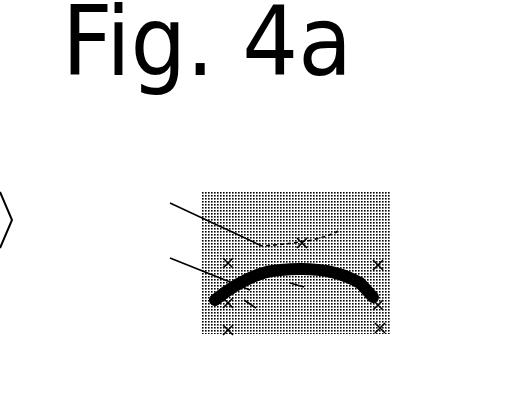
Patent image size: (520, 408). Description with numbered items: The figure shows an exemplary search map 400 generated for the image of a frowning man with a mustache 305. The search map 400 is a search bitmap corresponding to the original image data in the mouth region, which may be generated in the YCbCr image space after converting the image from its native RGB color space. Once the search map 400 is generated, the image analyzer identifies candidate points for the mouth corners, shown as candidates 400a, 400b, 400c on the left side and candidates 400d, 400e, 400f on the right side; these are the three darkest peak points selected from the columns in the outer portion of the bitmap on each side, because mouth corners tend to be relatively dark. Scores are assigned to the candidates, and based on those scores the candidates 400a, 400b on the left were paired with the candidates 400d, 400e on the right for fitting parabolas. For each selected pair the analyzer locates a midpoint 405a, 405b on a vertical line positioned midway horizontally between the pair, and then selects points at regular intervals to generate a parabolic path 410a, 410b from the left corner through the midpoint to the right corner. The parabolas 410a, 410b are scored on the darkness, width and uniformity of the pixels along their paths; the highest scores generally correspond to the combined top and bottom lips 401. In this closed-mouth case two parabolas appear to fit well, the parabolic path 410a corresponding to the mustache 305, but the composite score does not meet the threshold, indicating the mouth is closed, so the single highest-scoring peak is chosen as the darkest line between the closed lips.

The search map 400 is at (342, 192).
The mustache 305 is at (338, 230).
The parabolic path 410a is at (170, 203).
The parabolic path 410b is at (170, 258).
The candidate 400a is at (228, 263).
The candidate 400b is at (228, 303).
The candidate 400c is at (228, 330).
The candidate 400d is at (378, 265).
The candidate 400e is at (378, 305).
The candidate 400f is at (380, 328).
The midpoint 405a is at (302, 243).
The midpoint 405b is at (297, 285).
The combined top and bottom lips 401 is at (250, 305).